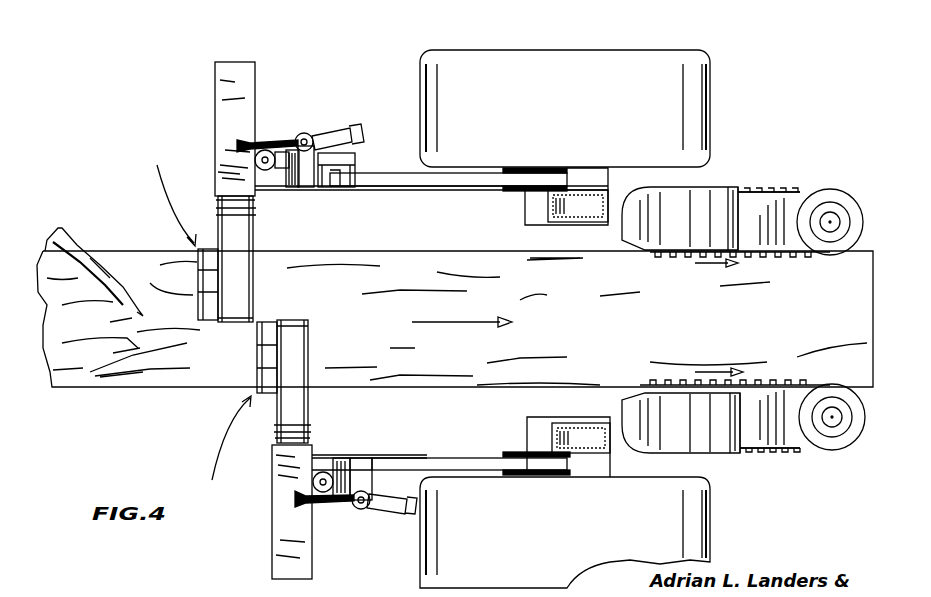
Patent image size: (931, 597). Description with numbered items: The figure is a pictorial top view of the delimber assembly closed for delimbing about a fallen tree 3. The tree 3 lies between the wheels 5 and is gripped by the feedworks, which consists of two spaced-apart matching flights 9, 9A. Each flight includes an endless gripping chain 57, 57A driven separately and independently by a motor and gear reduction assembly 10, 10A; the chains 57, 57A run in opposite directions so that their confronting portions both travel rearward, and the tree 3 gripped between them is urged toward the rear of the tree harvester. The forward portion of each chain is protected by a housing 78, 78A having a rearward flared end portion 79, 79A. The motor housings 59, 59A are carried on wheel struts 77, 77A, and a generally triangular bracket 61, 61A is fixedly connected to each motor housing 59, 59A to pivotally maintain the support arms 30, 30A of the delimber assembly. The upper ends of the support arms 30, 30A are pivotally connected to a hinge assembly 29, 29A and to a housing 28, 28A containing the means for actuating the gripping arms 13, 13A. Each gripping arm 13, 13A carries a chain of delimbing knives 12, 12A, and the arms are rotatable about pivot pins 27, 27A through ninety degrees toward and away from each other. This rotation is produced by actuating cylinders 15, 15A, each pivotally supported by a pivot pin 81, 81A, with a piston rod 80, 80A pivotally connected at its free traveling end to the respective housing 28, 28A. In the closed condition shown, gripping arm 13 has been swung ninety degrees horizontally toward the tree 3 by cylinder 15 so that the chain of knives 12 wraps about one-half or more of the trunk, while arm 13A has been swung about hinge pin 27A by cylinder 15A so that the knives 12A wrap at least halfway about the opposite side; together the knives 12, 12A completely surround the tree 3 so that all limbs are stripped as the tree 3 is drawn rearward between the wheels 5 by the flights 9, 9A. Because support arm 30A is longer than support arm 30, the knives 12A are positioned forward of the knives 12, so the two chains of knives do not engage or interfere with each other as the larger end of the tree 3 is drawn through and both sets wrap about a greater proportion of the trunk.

The fallen tree 3 is at (192, 388).
The wheel 5 is at (711, 98).
The flight 9 is at (788, 458).
The flight 9A is at (779, 160).
The motor and gear reduction assembly 10 is at (852, 443).
The motor and gear reduction assembly 10A is at (852, 192).
The chain of delimbing knives 12 is at (257, 358).
The chain of delimbing knives 12A is at (198, 282).
The gripping arm 13 is at (310, 345).
The gripping arm 13A is at (253, 300).
The actuating cylinder 15 is at (392, 507).
The actuating cylinder 15A is at (350, 129).
The pivot pin 27 is at (327, 472).
The pivot pin 27A is at (270, 169).
The housing 28 is at (272, 538).
The housing 28A is at (215, 102).
The hinge assembly 29 is at (378, 456).
The bracket 29A is at (330, 191).
The support arm 30 is at (447, 457).
The support arm 30A is at (440, 188).
The endless gripping chain 57 is at (776, 385).
The endless gripping chain 57A is at (796, 190).
The motor housing 59 is at (527, 429).
The motor housing 59A is at (525, 208).
The bracket 61 is at (520, 473).
The bracket 61A is at (536, 168).
The cylinder block 77 is at (597, 423).
The wheel strut 77A is at (596, 225).
The housing 78 is at (672, 440).
The pusher shoe 78A is at (665, 215).
The rearward flared end portion 79 is at (735, 455).
The plate 79A is at (738, 190).
The rod 80 is at (331, 504).
The rod 80A is at (278, 139).
The pivot pin 81 is at (362, 509).
The pivot pin 81A is at (311, 136).